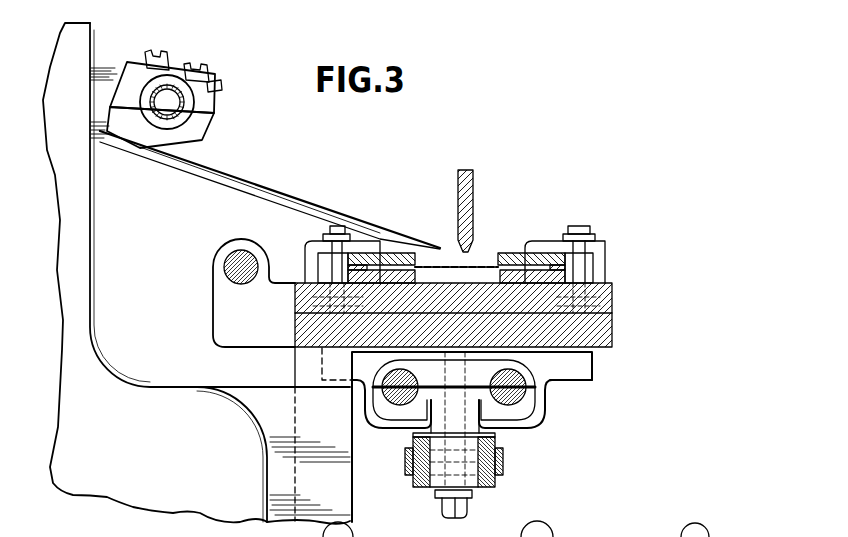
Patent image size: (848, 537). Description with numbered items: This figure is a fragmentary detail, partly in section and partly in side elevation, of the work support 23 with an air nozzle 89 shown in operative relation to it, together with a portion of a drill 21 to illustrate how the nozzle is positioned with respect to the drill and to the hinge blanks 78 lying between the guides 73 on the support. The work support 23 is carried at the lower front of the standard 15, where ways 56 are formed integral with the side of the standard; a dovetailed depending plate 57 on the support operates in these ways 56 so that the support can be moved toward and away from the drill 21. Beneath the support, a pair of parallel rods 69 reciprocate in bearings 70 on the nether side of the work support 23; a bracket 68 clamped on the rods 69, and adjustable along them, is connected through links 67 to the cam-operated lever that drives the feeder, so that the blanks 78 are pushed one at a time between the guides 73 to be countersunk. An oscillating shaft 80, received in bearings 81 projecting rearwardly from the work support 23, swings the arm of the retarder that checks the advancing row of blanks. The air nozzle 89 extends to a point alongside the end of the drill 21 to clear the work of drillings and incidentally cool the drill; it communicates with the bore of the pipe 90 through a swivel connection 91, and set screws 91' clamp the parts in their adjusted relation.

The standard 15 is at (85, 223).
The drill 21 is at (473, 204).
The work support 23 is at (612, 330).
The ways 56 is at (332, 507).
The dovetailed depending plate 57 is at (303, 367).
The links 67 is at (484, 484).
The bracket 68 is at (468, 425).
The parallel rods 69 is at (520, 397).
The bearings 70 is at (594, 372).
The guides 73 is at (393, 254).
The hinge blank 78 is at (481, 267).
The shaft 80 is at (235, 270).
The bearings 81 is at (237, 333).
The air nozzle 89 is at (279, 183).
The pipe 90 is at (149, 122).
The swivel connections 91 is at (516, 528).
The set screws 91' is at (229, 64).